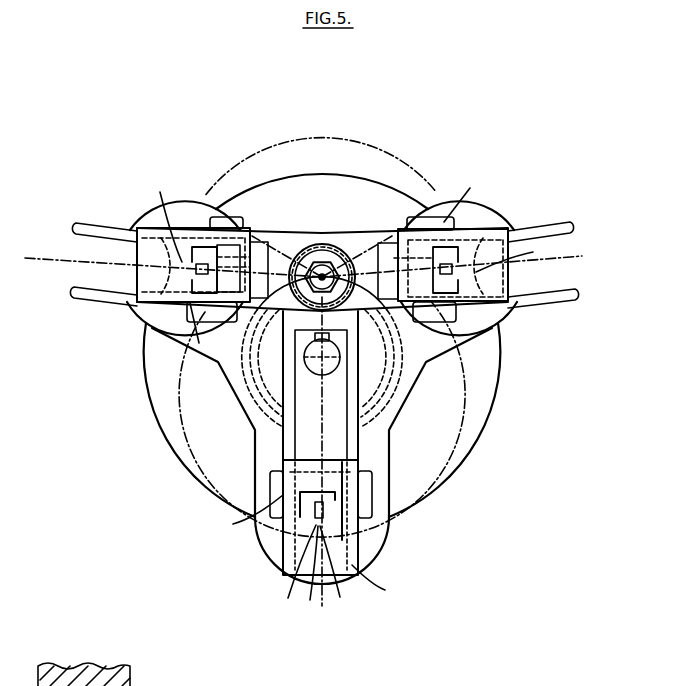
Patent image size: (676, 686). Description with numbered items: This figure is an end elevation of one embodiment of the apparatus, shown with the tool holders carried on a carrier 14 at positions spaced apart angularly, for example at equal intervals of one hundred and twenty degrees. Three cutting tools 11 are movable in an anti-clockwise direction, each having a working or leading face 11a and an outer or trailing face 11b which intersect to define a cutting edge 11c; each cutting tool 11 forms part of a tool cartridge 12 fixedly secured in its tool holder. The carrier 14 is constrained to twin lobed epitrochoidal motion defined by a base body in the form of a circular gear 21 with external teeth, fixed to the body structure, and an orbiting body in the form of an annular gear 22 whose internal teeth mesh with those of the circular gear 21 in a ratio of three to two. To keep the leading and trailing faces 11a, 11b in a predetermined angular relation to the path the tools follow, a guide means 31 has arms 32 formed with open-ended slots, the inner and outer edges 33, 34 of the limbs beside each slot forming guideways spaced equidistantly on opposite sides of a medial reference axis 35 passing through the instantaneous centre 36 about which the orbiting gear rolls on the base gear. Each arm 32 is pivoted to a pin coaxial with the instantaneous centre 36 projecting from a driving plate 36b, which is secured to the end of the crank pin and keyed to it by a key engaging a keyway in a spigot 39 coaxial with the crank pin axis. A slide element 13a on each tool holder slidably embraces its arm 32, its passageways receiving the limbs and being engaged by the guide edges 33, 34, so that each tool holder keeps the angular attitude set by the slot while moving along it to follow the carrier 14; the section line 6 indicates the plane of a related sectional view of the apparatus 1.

The tool turret 1 is at (368, 128).
The section line VI-VI 6 is at (324, 126).
The cutting tool 11 is at (351, 396).
The working or leading face 11a is at (416, 603).
The outer or trailing face 11b is at (301, 637).
The cutting edge 11c is at (380, 627).
The tool cartridge 12 is at (200, 257).
The slide element 13a is at (494, 188).
The carrier 14 is at (364, 190).
The circular gear 21 is at (231, 368).
The annular gear 22 is at (258, 394).
The guide means 31 is at (394, 190).
The arm 32 is at (274, 240).
The inner edge 33 is at (76, 234).
The outer edge 34 is at (98, 224).
The medial reference axis 35 is at (313, 421).
The instantaneous centre 36 is at (322, 277).
The driving plate 36b is at (253, 436).
The spigot 39 is at (320, 376).